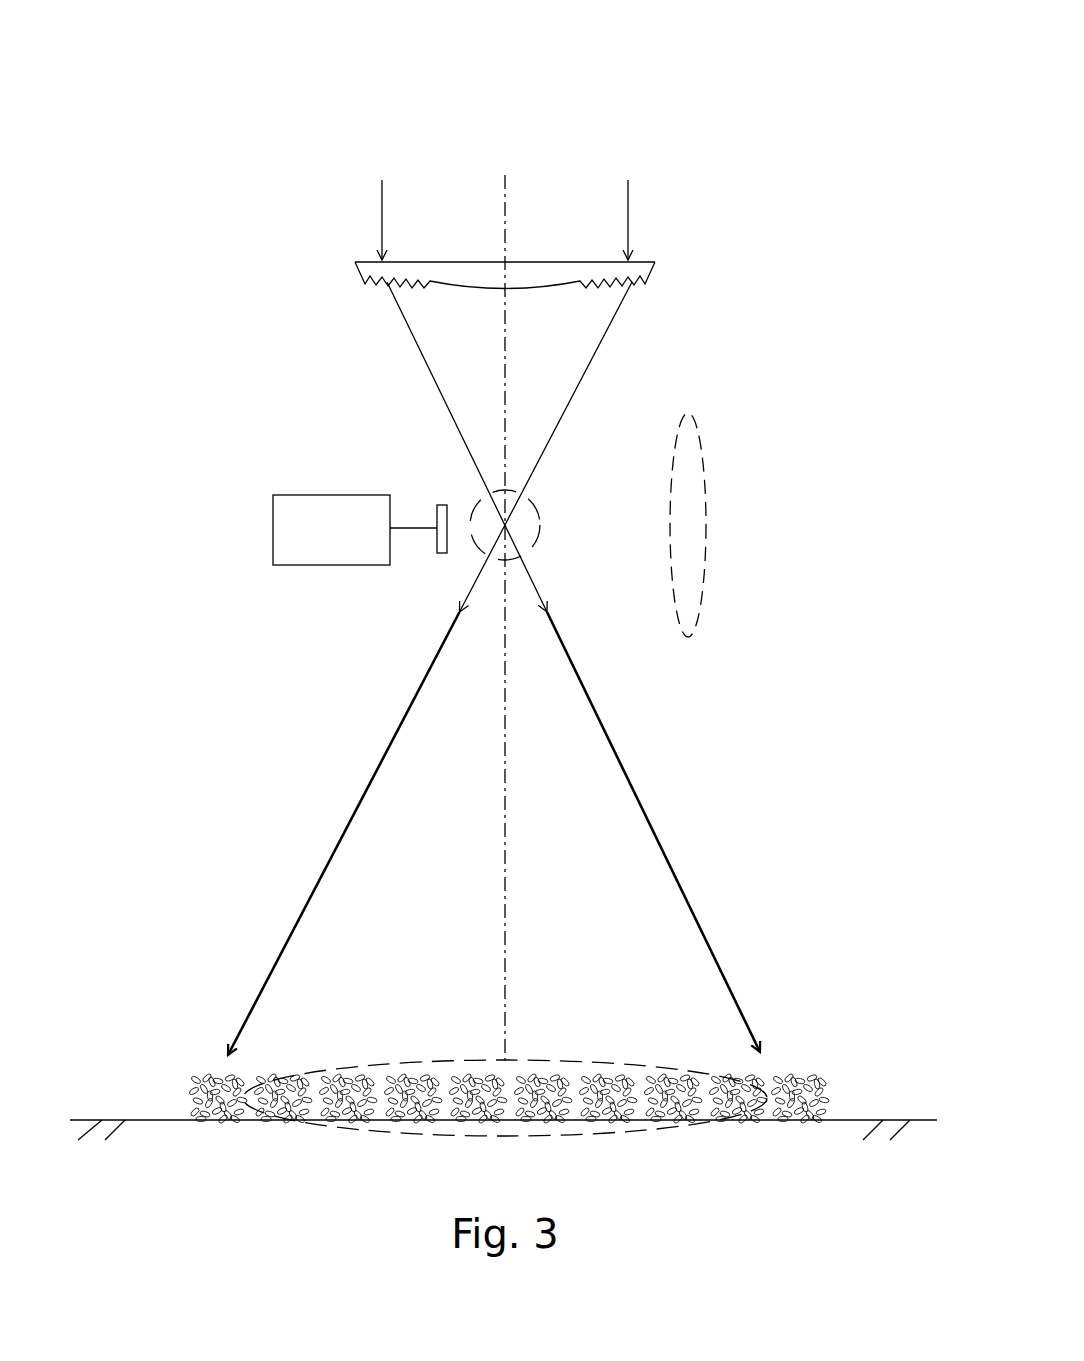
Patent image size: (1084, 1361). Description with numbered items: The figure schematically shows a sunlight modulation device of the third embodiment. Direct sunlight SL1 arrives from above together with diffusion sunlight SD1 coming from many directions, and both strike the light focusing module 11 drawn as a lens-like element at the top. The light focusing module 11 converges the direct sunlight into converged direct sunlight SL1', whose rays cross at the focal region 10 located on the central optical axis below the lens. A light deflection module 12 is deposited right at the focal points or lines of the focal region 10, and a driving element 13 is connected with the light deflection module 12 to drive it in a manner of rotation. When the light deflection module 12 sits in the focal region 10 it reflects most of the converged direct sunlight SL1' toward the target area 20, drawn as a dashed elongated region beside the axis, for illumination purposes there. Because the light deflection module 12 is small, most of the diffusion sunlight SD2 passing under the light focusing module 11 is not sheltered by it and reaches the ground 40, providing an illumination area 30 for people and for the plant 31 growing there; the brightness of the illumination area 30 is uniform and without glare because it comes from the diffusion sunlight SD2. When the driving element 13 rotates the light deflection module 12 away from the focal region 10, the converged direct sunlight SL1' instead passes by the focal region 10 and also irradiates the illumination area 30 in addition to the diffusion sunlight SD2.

The focal region 10 is at (530, 550).
The light focusing module 11 is at (660, 266).
The light deflection module 12 is at (435, 510).
The driving element 13 is at (296, 497).
The target area 20 is at (704, 478).
The illumination area 30 is at (580, 1137).
The plant 31 is at (541, 1075).
The ground 40 is at (857, 1120).
The direct sunlight SL1 is at (459, 220).
The converged direct sunlight SL1' is at (530, 491).
The diffusion sunlight SD1 is at (328, 155).
The diffusion sunlight SD2 is at (345, 790).